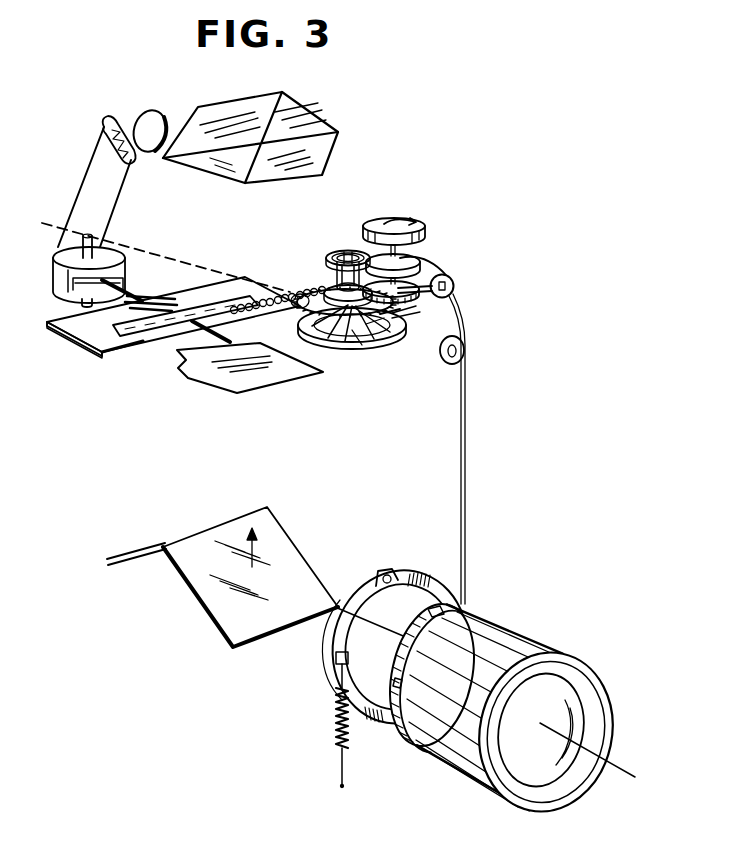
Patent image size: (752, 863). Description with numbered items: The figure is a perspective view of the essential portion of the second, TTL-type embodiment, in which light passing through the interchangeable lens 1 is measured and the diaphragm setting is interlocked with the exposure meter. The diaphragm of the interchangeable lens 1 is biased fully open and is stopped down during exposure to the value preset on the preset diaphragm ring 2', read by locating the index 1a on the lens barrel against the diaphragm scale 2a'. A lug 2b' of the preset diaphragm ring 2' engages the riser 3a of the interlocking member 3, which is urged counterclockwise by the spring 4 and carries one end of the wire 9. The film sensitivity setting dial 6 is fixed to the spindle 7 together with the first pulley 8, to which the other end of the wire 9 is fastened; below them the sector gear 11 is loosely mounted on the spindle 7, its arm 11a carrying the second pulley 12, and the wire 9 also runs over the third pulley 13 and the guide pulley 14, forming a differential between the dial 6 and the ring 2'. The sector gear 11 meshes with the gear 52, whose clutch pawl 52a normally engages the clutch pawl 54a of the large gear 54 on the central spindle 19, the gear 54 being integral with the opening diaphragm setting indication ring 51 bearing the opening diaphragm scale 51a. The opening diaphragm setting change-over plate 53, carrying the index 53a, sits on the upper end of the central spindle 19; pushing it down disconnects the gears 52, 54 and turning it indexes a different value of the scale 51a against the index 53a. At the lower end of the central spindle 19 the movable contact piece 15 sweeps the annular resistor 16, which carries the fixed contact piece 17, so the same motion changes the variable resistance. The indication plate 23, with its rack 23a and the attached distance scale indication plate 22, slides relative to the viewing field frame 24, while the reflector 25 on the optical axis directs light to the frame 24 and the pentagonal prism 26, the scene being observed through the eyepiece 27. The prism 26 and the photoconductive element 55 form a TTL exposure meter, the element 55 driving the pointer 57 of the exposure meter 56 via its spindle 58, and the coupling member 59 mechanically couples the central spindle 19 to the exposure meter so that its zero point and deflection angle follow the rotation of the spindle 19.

The interchangeable lens 1 is at (548, 641).
The index 1a is at (445, 640).
The preset diaphragm ring 2' is at (452, 667).
The diaphragm scale 2a' is at (382, 680).
The lug 2b' is at (416, 609).
The interlocking member 3 is at (366, 592).
The riser 3a is at (390, 577).
The spring 4 is at (338, 732).
The film sensitivity setting dial 6 is at (388, 223).
The spindle 7 is at (418, 258).
The first pulley 8 is at (418, 272).
The wire 9 is at (453, 276).
The sector gear 11 is at (416, 306).
The arm 11a is at (440, 297).
The second pulley 12 is at (455, 291).
The third pulley 13 is at (420, 312).
The guide pulley 14 is at (447, 365).
The movable contact piece 15 is at (362, 344).
The annular resistor 16 is at (380, 326).
The fixed contact piece 17 is at (398, 312).
The central spindle 19 is at (312, 282).
The distance scale indication plate 22 is at (140, 342).
The indication plate 23 is at (213, 288).
The rack 23a is at (194, 345).
The viewing field frame 24 is at (210, 371).
The reflector 25 is at (215, 625).
The pentagonal prism 26 is at (318, 128).
The eyepiece 27 is at (147, 115).
The opening diaphragm setting indication ring 51 is at (331, 268).
The opening diaphragm scale 51a is at (336, 264).
The gear 52 is at (328, 290).
The clutch pawl 52a is at (294, 296).
The opening diaphragm setting change-over plate 53 is at (346, 254).
The index 53a is at (338, 256).
The large gear 54 is at (344, 336).
The clutch pawl 54a is at (318, 312).
The photoconductive element 55 is at (110, 119).
The exposure meter 56 is at (62, 270).
The pointer 57 is at (82, 303).
The spindle 58 is at (80, 243).
The coupling member 59 is at (125, 234).